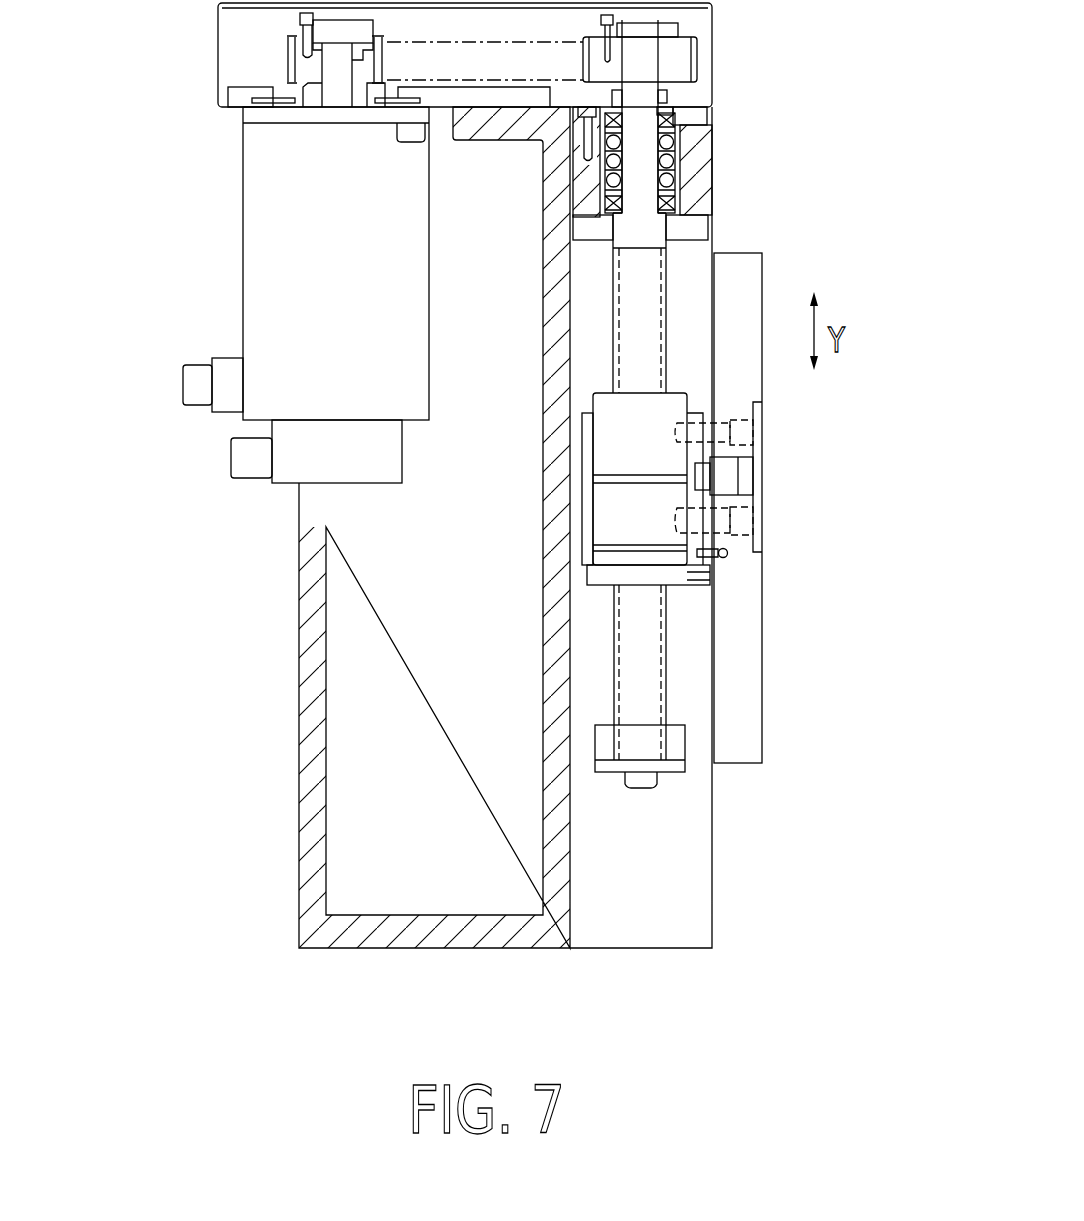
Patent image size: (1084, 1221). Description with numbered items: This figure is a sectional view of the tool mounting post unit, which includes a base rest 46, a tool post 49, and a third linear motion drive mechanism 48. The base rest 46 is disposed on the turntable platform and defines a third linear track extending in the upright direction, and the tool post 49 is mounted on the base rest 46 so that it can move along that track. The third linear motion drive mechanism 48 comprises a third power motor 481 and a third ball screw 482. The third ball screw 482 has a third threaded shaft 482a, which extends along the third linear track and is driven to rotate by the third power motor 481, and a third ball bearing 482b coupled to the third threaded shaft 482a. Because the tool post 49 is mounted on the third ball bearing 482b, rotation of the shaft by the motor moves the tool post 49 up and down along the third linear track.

The base rest 46 is at (284, 695).
The third linear motion drive mechanism 48 is at (476, 404).
The third power motor 481 is at (260, 227).
The third ball screw 482 is at (633, 265).
The third threaded shaft 482a is at (667, 698).
The third ball bearing 482b is at (677, 537).
The tool post 49 is at (778, 647).